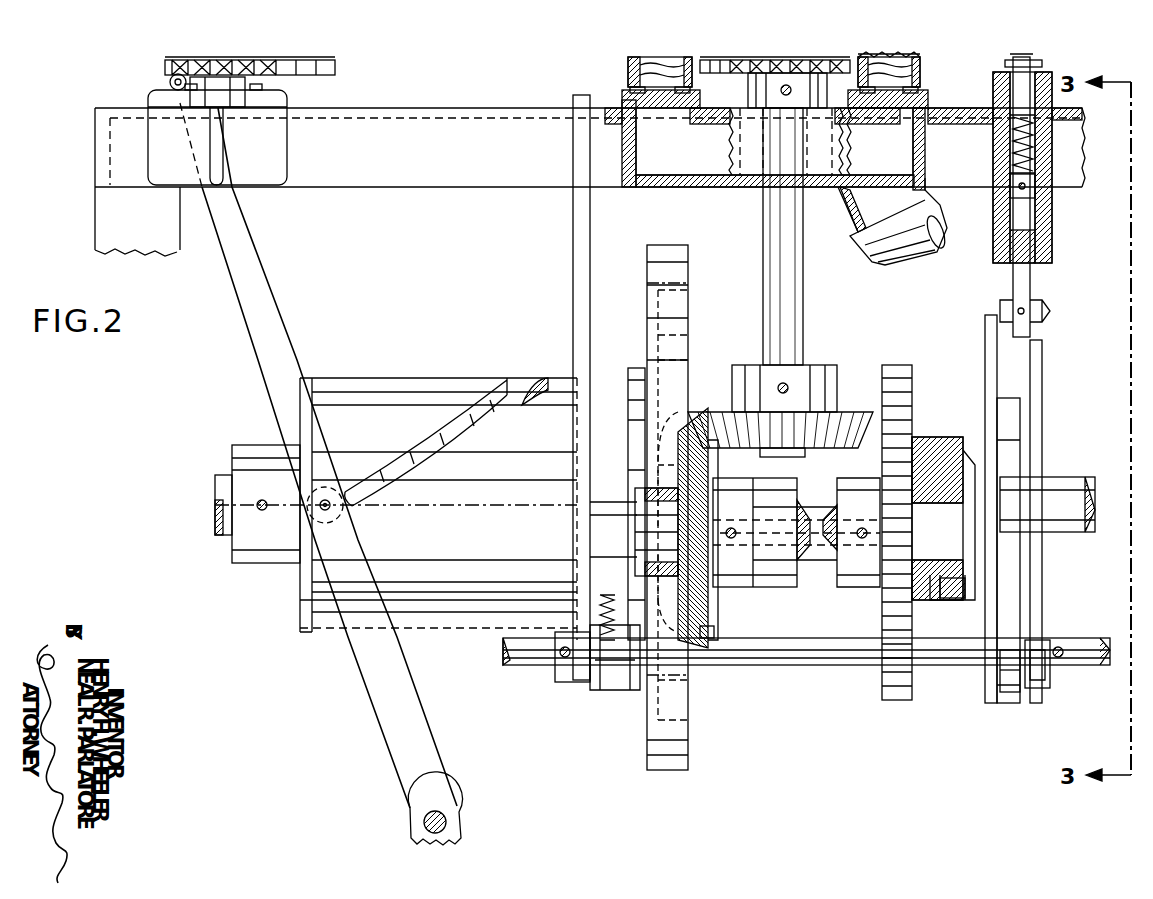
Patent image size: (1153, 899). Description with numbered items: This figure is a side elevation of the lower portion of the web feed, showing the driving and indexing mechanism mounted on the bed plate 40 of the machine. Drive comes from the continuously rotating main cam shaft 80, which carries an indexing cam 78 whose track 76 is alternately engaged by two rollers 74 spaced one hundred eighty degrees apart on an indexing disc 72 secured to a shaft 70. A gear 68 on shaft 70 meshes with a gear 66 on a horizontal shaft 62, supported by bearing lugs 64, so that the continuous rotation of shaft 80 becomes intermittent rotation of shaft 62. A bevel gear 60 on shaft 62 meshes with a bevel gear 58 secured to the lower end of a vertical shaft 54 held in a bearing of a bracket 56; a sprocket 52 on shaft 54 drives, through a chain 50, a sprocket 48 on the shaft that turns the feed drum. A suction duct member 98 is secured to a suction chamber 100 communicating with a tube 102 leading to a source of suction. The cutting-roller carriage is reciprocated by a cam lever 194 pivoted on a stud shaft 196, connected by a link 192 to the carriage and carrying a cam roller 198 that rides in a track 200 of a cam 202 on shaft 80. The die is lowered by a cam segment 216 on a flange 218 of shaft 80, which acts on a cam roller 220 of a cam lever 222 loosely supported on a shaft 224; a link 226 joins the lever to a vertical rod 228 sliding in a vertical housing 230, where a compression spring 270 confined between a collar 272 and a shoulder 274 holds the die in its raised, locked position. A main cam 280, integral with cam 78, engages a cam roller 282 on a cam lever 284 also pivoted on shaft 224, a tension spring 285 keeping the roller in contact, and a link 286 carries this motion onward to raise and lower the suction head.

The bed plate 40 is at (105, 130).
The sprocket 48 is at (172, 72).
The chain 50 is at (338, 66).
The sprocket 52 is at (912, 62).
The vertical shaft 54 is at (805, 313).
The bracket 56 is at (812, 178).
The bevel gear 58 is at (838, 448).
The bevel gear 60 is at (712, 606).
The horizontal shaft 62 is at (766, 562).
The bearing lugs 64 is at (640, 488).
The gear 66 is at (910, 368).
The gear 68 is at (914, 437).
The shaft 70 is at (835, 555).
The indexing disc 72 is at (714, 632).
The rollers 74 is at (676, 405).
The track 76 is at (690, 292).
The indexing cam 78 is at (690, 259).
The main cam shaft 80 is at (232, 478).
The suction duct member 98 is at (642, 75).
The suction chamber 100 is at (692, 178).
The tube 102 is at (872, 258).
The link 192 is at (248, 80).
The cam lever 194 is at (268, 297).
The stud shaft 196 is at (448, 822).
The cam roller 198 is at (348, 510).
The track 200 is at (476, 385).
The cam 202 is at (430, 385).
The cam segment 216 is at (1012, 420).
The flange 218 is at (985, 325).
The cam roller 220 is at (1010, 692).
The cam lever 222 is at (1040, 686).
The shaft 224 is at (797, 665).
The link 226 is at (1042, 432).
The vertical rod 228 is at (1030, 290).
The vertical housing 230 is at (1052, 240).
The compression spring 270 is at (1035, 138).
The collar 272 is at (1035, 198).
The shoulder 274 is at (1042, 116).
The main cam 280 is at (636, 368).
The cam roller 282 is at (610, 690).
The cam lever 284 is at (580, 685).
The tension spring 285 is at (598, 598).
The link 286 is at (573, 243).